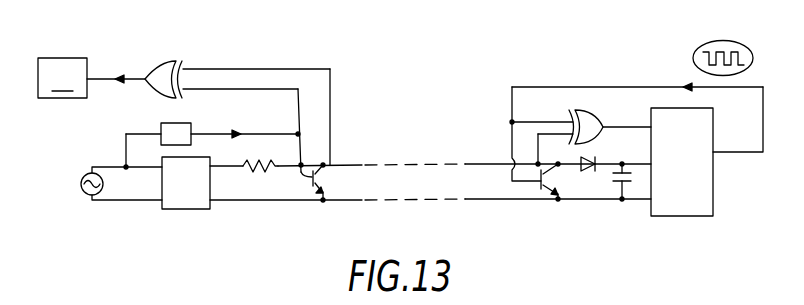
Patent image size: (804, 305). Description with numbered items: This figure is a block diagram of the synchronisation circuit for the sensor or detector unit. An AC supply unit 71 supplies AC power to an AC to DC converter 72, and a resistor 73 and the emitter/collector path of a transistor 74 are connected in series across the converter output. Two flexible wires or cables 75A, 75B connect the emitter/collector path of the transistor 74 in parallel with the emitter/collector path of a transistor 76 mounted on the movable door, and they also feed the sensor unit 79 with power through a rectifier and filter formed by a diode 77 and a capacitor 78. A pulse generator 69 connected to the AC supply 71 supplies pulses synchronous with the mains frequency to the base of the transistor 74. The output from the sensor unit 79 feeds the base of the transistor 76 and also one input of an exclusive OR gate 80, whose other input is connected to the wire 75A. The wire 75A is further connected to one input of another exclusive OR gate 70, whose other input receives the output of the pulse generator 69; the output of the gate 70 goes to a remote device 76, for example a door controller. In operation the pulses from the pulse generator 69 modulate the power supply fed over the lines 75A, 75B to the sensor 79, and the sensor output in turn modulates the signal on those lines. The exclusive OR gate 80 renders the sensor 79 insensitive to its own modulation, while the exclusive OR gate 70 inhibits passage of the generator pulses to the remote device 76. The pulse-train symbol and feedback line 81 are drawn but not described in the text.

The pulse generator 69 is at (163, 125).
The exclusive OR gate 70 is at (157, 62).
The AC supply unit 71 is at (82, 191).
The AC to DC converter 72 is at (181, 211).
The resistor 73 is at (252, 160).
The transistor 74 is at (308, 188).
The flexible wire 75A is at (407, 150).
The flexible wire 75B is at (405, 201).
The transistor 76 is at (546, 191).
The diode 77 is at (590, 172).
The capacitor 78 is at (626, 188).
The sensor unit 79 is at (695, 174).
The exclusive OR gate 80 is at (598, 113).
The clock signal line 81 is at (632, 86).